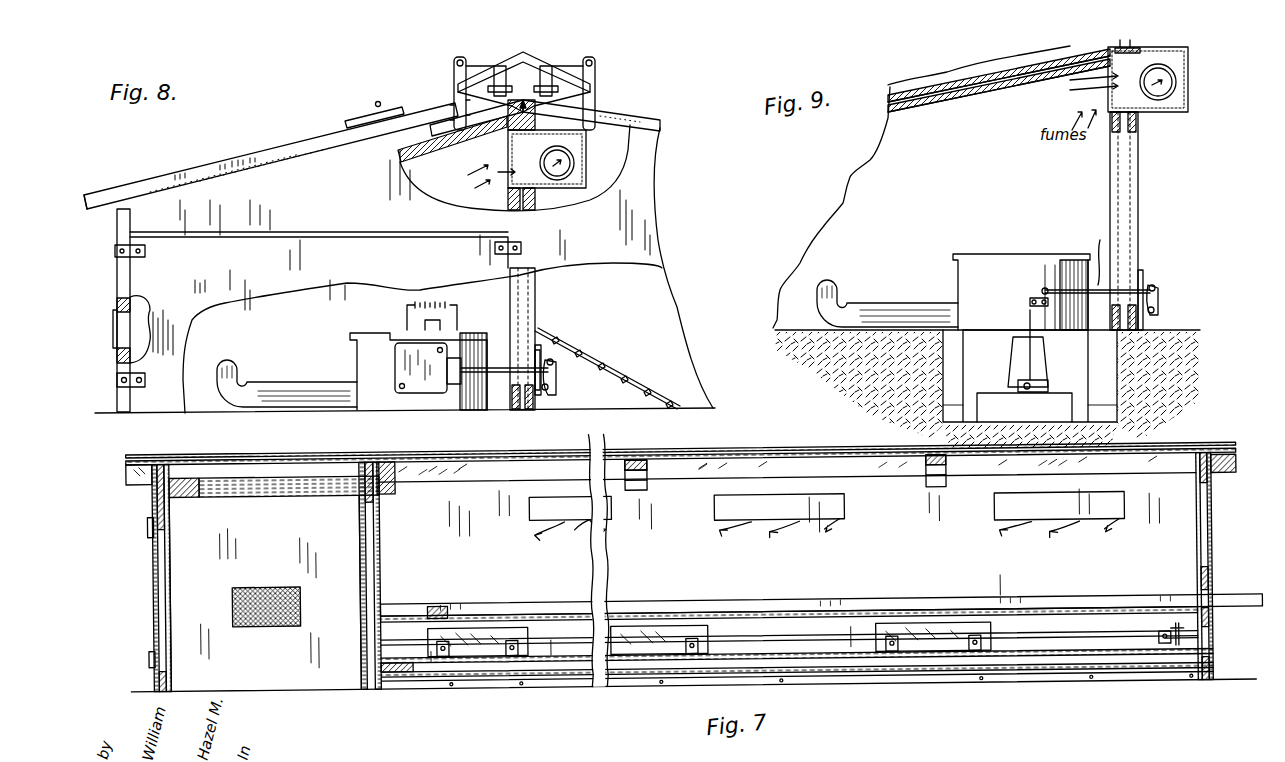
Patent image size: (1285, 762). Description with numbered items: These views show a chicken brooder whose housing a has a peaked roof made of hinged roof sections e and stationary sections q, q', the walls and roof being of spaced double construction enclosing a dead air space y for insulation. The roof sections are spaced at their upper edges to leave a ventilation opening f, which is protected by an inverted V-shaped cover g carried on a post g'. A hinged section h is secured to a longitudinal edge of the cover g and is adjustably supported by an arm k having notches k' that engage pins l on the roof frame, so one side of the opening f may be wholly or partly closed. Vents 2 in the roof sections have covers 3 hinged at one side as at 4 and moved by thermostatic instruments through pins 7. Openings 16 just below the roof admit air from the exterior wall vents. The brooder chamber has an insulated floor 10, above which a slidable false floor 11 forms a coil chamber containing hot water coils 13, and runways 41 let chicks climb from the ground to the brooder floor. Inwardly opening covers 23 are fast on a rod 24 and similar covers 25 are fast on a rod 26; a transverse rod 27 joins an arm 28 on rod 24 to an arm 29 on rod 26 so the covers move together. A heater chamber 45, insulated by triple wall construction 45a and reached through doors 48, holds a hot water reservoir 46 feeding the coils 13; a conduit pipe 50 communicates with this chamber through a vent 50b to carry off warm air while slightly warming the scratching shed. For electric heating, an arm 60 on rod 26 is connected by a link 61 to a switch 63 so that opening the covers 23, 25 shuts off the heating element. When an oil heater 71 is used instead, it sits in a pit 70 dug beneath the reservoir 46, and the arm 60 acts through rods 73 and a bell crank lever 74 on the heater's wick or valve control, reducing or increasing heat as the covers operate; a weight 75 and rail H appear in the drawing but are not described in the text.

In FIG. 8, the vent 2 is at (377, 122).
In FIG. 8, the cover 3 is at (345, 113).
In FIG. 8, the hinge 4 is at (378, 100).
In FIG. 8, the pin 7 is at (375, 100).
In FIG. 8, the floor 10 is at (210, 402).
In FIG. 9, the floor 10 is at (775, 328).
In FIG. 7, the floor 10 is at (1052, 682).
In FIG. 7, the false floor 11 is at (442, 610).
In FIG. 8, the hot water coils 13 is at (290, 393).
In FIG. 9, the hot water coils 13 is at (878, 308).
In FIG. 7, the opening 16 is at (572, 532).
In FIG. 7, the inwardly opening cover 23 is at (478, 632).
In FIG. 7, the rod 24 is at (773, 643).
In FIG. 8, the cover 25 is at (540, 357).
In FIG. 9, the cover 25 is at (1143, 280).
In FIG. 8, the rod 26 is at (548, 390).
In FIG. 9, the rod 26 is at (1154, 311).
In FIG. 7, the rod 27 is at (1195, 645).
In FIG. 7, the arm 28 is at (1200, 655).
In FIG. 8, the arm 29 is at (575, 350).
In FIG. 8, the runway 41 is at (608, 370).
In FIG. 7, the heater chamber 45 is at (348, 662).
In FIG. 8, the triple wall construction 45a is at (115, 332).
In FIG. 9, the triple wall construction 45a is at (1110, 212).
In FIG. 7, the triple wall construction 45a is at (268, 605).
In FIG. 8, the hot water reservoir 46 is at (357, 345).
In FIG. 9, the hot water reservoir 46 is at (985, 275).
In FIG. 8, the door 48 is at (343, 252).
In FIG. 7, the door 48 is at (153, 587).
In FIG. 8, the conduit pipe 50 is at (586, 172).
In FIG. 9, the conduit pipe 50 is at (1168, 97).
In FIG. 9, the vent 50b is at (1081, 86).
In FIG. 8, the arm 60 is at (558, 380).
In FIG. 9, the arm 60 is at (1158, 298).
In FIG. 8, the link 61 is at (503, 390).
In FIG. 8, the switch 63 is at (455, 388).
In FIG. 9, the pit 70 is at (941, 389).
In FIG. 9, the oil heater 71 is at (1015, 348).
In FIG. 9, the rod 73 is at (1010, 308).
In FIG. 9, the bell crank lever 74 is at (1033, 298).
In FIG. 9, the weight 75 is at (1018, 383).
In FIG. 8, the housing a is at (106, 241).
In FIG. 7, the housing a is at (1165, 456).
In FIG. 7, the roof section e is at (553, 456).
In FIG. 8, the ventilation opening f is at (528, 72).
In FIG. 8, the inverted V-shaped cover g is at (522, 63).
In FIG. 8, the post g' is at (608, 56).
In FIG. 8, the hinged section h is at (566, 66).
In FIG. 8, the arm k is at (536, 89).
In FIG. 8, the notch k' is at (523, 87).
In FIG. 8, the pin l is at (432, 97).
In FIG. 8, the stationary roof section q is at (271, 156).
In FIG. 9, the stationary roof section q is at (1036, 245).
In FIG. 7, the stationary roof section q is at (645, 484).
In FIG. 8, the stationary roof section q' is at (613, 115).
In FIG. 8, the dead air space y is at (535, 288).
In FIG. 9, the dead air space y is at (1138, 210).
In FIG. 7, the dead air space y is at (1213, 541).
In FIG. 7, the rail H is at (1243, 609).